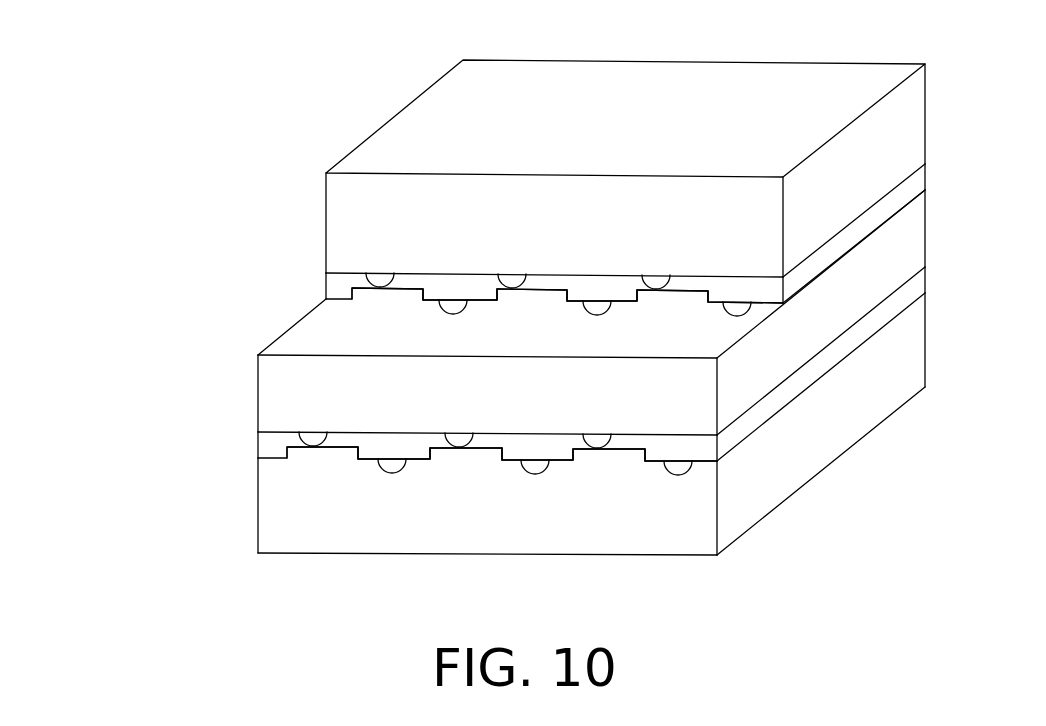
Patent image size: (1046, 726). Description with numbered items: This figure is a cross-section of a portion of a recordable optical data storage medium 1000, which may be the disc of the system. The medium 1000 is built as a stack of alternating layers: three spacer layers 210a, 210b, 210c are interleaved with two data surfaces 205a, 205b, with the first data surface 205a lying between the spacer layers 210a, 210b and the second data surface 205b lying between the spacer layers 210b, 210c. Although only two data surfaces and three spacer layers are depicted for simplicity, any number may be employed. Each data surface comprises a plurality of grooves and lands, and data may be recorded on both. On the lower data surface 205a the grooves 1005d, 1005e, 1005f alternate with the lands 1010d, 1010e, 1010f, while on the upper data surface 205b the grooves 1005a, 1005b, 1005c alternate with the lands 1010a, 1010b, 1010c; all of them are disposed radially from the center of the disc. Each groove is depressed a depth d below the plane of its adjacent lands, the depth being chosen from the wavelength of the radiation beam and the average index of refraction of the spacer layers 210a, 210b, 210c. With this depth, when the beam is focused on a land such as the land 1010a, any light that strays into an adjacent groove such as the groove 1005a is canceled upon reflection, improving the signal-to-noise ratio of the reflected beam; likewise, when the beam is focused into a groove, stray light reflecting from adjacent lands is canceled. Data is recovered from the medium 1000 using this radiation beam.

The recordable optical data storage medium 1000 is at (120, 98).
The spacer layer 210a is at (258, 536).
The spacer layer 210b is at (258, 355).
The spacer layer 210c is at (326, 173).
The data surface 205a is at (258, 455).
The data surface 205b is at (326, 285).
The groove 1005a is at (367, 278).
The groove 1005b is at (498, 281).
The groove 1005c is at (641, 281).
The groove 1005d is at (291, 438).
The groove 1005e is at (431, 439).
The groove 1005f is at (574, 439).
The land 1010a is at (437, 301).
The land 1010b is at (580, 303).
The land 1010c is at (720, 304).
The land 1010d is at (372, 460).
The land 1010e is at (513, 461).
The land 1010f is at (654, 462).